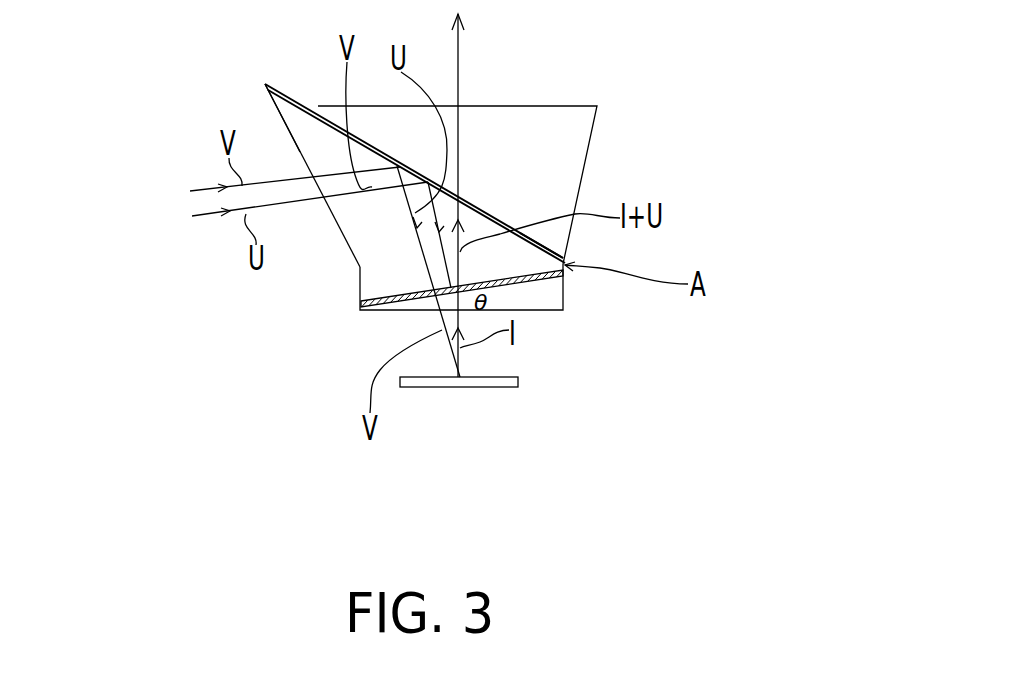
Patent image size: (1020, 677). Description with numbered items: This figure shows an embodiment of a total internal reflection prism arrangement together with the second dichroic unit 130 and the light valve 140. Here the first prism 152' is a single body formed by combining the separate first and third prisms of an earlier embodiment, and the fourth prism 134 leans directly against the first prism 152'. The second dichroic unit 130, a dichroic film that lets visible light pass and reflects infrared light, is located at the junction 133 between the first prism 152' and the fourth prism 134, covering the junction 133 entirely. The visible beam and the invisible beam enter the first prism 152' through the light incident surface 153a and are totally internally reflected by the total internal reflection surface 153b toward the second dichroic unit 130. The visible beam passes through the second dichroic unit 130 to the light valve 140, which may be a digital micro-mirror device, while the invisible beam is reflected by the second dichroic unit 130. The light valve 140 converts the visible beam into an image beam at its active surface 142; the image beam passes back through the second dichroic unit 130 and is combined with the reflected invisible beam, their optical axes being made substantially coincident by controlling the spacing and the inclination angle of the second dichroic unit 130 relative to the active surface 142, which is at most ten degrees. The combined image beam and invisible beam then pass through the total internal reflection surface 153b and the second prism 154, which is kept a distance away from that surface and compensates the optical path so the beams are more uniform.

The second dichroic unit 130 is at (492, 364).
The junction 133 is at (386, 307).
The fourth prism 134 is at (540, 302).
The light valve 140 is at (509, 412).
The active surface 142 is at (501, 369).
The first prism 152' is at (477, 173).
The light incident surface 153a is at (282, 118).
The total internal reflection surface 153b is at (548, 249).
The second prism 154 is at (585, 131).